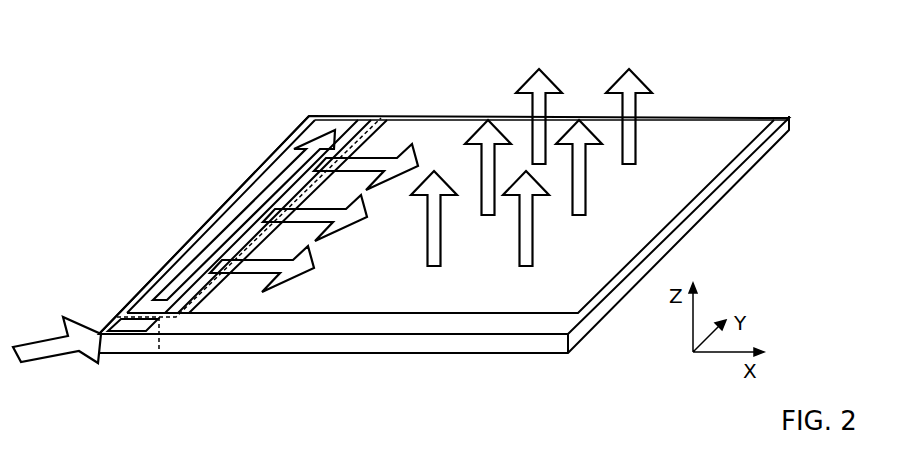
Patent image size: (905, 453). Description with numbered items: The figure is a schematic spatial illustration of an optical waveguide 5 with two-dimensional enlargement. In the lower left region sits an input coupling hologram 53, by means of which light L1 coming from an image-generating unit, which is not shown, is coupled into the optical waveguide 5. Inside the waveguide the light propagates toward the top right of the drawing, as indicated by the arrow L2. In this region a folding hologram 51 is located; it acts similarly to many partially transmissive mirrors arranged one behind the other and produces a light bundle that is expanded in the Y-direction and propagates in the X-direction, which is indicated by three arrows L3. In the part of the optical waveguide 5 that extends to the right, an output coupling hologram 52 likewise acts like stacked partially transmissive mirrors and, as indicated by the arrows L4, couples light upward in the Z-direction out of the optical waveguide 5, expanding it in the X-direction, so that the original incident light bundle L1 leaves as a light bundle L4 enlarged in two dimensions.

The optical waveguide 5 is at (789, 127).
The folding hologram 51 is at (317, 127).
The output coupling hologram 52 is at (495, 306).
The input coupling hologram 53 is at (131, 326).
The light L1 is at (48, 349).
The arrow L2 is at (246, 215).
The arrows L3 is at (393, 156).
The arrows L4 is at (538, 87).